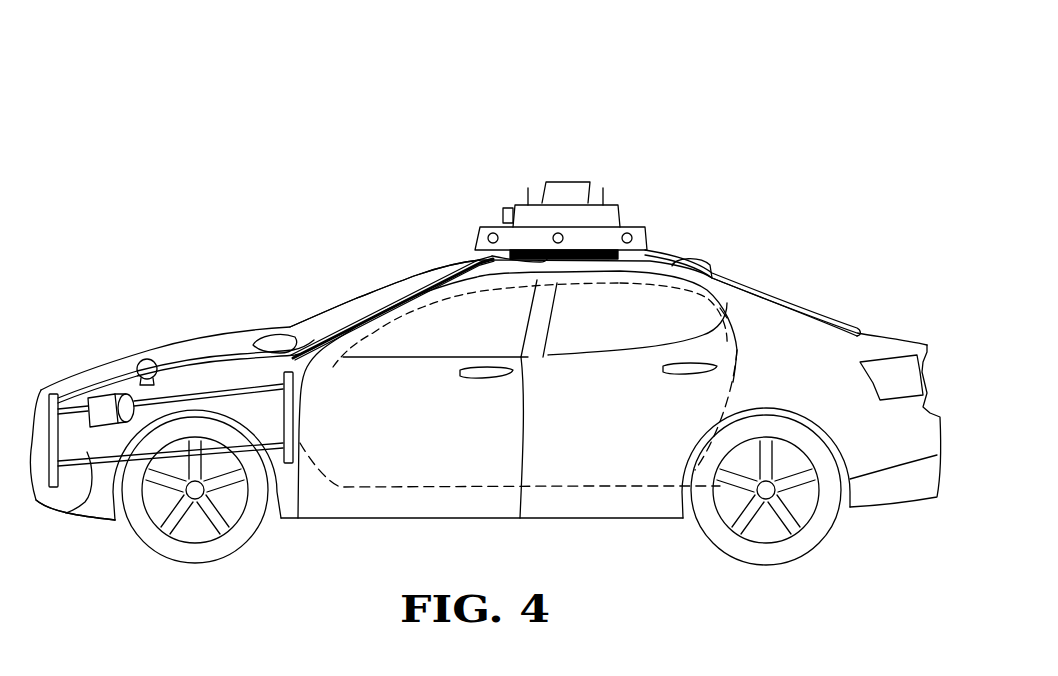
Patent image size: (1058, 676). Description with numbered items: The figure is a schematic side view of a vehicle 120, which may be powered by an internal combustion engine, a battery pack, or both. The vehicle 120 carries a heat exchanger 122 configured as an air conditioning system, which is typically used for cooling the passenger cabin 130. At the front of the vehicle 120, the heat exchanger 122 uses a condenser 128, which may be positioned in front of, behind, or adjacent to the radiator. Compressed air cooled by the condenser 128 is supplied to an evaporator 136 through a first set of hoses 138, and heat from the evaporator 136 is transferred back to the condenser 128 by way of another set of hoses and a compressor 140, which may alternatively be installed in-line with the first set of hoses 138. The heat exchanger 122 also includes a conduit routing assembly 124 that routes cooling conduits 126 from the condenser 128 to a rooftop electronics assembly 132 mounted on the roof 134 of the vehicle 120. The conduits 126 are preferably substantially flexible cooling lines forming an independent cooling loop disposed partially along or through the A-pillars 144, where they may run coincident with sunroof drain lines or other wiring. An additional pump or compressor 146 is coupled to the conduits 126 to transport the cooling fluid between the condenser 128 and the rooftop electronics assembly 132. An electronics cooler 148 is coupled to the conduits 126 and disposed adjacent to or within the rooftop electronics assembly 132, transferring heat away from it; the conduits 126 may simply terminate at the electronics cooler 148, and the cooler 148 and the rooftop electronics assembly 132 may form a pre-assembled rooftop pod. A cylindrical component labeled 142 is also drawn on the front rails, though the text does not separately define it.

The vehicle 120 is at (253, 180).
The heat exchanger 122 is at (133, 333).
The conduit routing assembly 124 is at (347, 313).
The cooling conduits 126 is at (313, 364).
The condenser 128 is at (67, 383).
The passenger cabin 130 is at (660, 268).
The rooftop electronics assembly 132 is at (516, 206).
The roof 134 is at (443, 262).
The evaporator 136 is at (298, 437).
The first set of hoses 138 is at (92, 470).
The compressor 140 is at (233, 370).
The cylindrical sensor 142 is at (107, 396).
The A-pillars 144 is at (392, 298).
The pump or compressor 146 is at (160, 364).
The electronics cooler 148 is at (583, 257).